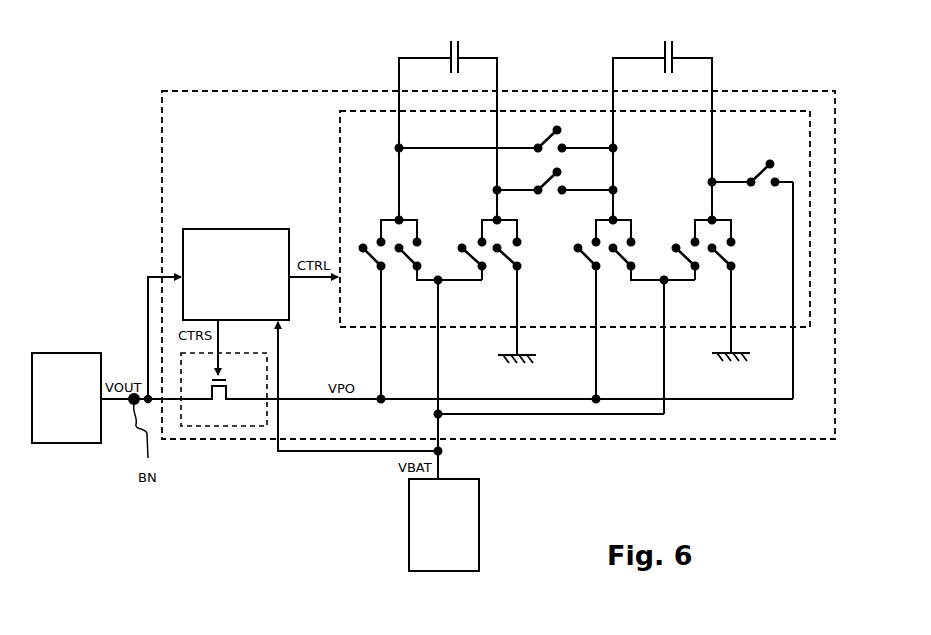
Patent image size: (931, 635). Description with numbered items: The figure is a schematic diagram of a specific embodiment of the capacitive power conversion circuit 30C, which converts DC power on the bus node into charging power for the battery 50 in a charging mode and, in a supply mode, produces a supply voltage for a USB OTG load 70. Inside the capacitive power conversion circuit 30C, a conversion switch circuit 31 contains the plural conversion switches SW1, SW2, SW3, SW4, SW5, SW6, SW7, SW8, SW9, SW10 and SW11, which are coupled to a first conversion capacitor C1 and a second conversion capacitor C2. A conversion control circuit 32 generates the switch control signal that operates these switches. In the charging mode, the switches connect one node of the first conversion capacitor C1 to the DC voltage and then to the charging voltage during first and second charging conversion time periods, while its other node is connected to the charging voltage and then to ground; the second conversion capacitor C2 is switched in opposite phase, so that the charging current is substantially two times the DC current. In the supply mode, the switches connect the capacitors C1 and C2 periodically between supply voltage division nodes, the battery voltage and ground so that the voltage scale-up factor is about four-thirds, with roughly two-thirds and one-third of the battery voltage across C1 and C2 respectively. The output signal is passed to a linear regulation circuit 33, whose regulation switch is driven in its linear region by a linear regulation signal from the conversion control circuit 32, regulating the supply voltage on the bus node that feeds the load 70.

The capacitive power conversion circuit 30C is at (221, 126).
The conversion switch circuit 31 is at (799, 134).
The conversion control circuit 32 is at (283, 314).
The linear regulation circuit 33 is at (258, 379).
The USB OTG load 70 is at (56, 430).
The battery 50 is at (434, 556).
The first conversion capacitor C1 is at (448, 120).
The second conversion capacitor C2 is at (662, 120).
The conversion switch SW1 is at (366, 313).
The conversion switch SW2 is at (439, 273).
The conversion switch SW3 is at (464, 253).
The conversion switch SW4 is at (510, 304).
The conversion switch SW5 is at (580, 313).
The conversion switch SW6 is at (653, 273).
The conversion switch SW7 is at (677, 253).
The conversion switch SW8 is at (725, 303).
The conversion switch SW9 is at (555, 181).
The conversion switch SW10 is at (506, 139).
The conversion switch SW11 is at (752, 173).